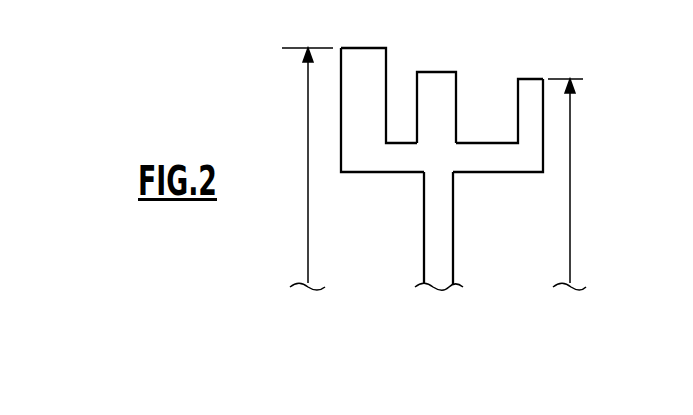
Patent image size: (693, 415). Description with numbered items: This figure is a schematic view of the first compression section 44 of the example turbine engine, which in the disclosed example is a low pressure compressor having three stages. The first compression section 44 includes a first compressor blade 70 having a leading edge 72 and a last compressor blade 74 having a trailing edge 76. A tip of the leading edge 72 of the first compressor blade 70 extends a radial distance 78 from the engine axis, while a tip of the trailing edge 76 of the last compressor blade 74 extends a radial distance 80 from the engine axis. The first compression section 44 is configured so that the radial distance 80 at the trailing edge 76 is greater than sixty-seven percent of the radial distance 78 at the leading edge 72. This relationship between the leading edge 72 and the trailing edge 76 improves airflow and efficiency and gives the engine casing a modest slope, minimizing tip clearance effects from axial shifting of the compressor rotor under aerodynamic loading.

The first compression section 44 is at (467, 162).
The first compressor blade 70 is at (378, 65).
The leading edge 72 is at (341, 153).
The last compressor blade 74 is at (528, 90).
The trailing edge 76 is at (545, 160).
The radial distance 78 is at (307, 116).
The radial distance 80 is at (572, 203).